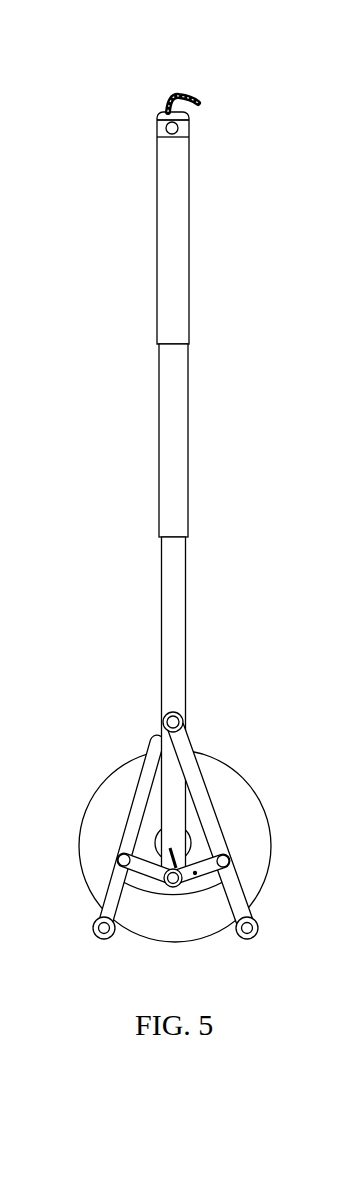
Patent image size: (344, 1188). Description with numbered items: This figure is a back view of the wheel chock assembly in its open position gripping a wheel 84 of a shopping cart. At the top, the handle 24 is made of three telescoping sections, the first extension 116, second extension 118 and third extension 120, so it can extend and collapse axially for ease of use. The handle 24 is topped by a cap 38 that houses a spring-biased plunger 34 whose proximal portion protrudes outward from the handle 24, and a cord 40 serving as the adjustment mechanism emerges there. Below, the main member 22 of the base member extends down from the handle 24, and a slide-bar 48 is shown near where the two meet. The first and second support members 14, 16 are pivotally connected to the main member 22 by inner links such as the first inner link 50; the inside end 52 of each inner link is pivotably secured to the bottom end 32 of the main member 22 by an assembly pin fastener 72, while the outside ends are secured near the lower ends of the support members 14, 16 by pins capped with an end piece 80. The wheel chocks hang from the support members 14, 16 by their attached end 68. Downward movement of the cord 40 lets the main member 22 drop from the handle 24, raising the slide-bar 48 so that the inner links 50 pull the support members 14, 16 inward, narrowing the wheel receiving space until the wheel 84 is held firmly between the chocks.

The first support member 14 is at (237, 898).
The second support member 16 is at (110, 890).
The main member 22 is at (172, 810).
The handle 24 is at (156, 495).
The bottom end of main member 32 is at (183, 842).
The plunger 34 is at (188, 130).
The cap 38 is at (158, 128).
The cord 40 is at (168, 95).
The slide-bar 48 is at (182, 720).
The first inner link 50 is at (124, 838).
The inside end of inner link 52 is at (103, 942).
The attached end of wheel chock 68 is at (255, 935).
The assembly pin fastener 72 is at (174, 888).
The end piece 80 is at (205, 875).
The wheel 84 is at (155, 922).
The first extension 116 is at (177, 282).
The second extension 118 is at (170, 403).
The third extension 120 is at (170, 602).